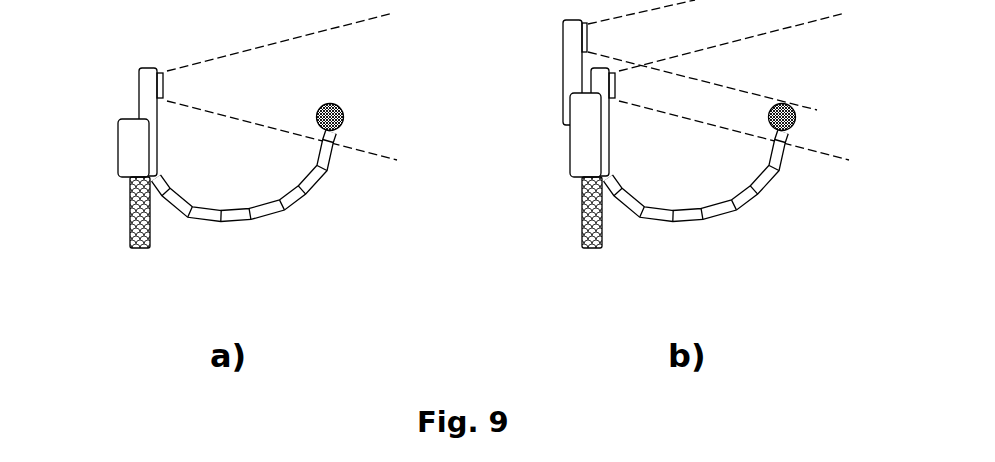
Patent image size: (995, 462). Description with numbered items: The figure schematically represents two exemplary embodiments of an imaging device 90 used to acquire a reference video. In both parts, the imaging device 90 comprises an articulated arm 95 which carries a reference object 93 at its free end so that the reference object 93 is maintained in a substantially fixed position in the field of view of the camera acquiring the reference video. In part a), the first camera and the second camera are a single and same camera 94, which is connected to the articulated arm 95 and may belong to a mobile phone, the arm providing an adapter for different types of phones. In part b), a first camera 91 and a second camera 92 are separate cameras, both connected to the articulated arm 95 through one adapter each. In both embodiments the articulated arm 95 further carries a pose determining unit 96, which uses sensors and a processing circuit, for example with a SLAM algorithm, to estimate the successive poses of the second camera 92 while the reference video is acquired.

The imaging device 90 is at (109, 244).
The first camera 91 is at (563, 74).
The second camera 92 is at (611, 118).
The reference object 93 is at (345, 118).
The camera 94 is at (159, 120).
The articulated arm 95 is at (292, 204).
The pose determining unit 96 is at (118, 150).